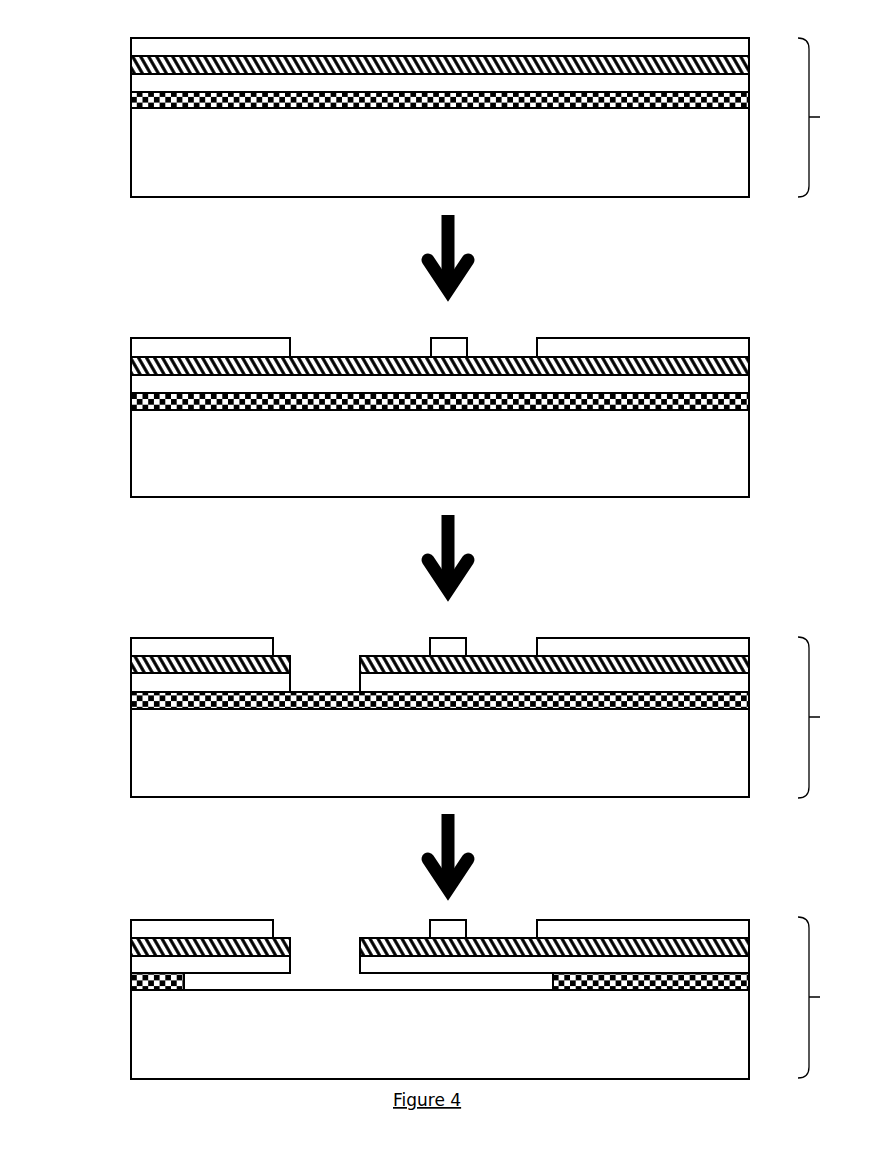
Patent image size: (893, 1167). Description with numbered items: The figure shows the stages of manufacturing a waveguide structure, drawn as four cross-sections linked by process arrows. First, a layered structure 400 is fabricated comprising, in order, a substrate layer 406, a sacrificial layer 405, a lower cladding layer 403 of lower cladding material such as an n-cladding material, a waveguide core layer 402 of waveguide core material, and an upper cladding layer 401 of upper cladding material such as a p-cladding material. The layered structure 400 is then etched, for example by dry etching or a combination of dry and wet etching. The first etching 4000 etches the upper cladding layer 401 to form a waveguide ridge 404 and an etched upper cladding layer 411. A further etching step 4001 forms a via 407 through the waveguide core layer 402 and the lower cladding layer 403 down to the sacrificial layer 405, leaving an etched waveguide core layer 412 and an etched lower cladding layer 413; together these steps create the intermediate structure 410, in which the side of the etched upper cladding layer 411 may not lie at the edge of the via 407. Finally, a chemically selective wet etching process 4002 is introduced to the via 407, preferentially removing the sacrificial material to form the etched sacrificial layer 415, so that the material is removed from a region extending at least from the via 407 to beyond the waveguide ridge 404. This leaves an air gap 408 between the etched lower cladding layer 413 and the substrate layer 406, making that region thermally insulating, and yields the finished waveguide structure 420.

The layered structure 400 is at (826, 117).
The upper cladding layer 401 is at (215, 38).
The waveguide core layer 402 is at (131, 65).
The lower cladding layer 403 is at (131, 80).
The waveguide ridge 404 is at (453, 337).
The sacrificial layer 405 is at (131, 99).
The substrate layer 406 is at (131, 126).
The via 407 is at (324, 673).
The air gap 408 is at (376, 986).
The intermediate structure 410 is at (827, 717).
The etched upper cladding layer 411 is at (215, 338).
The etched waveguide core layer 412 is at (131, 663).
The etched lower cladding layer 413 is at (131, 681).
The etched sacrificial layer 415 is at (131, 979).
The waveguide structure 420 is at (827, 997).
The first etching 4000 is at (455, 233).
The etching step 4001 is at (455, 532).
The wet etching process 4002 is at (455, 832).